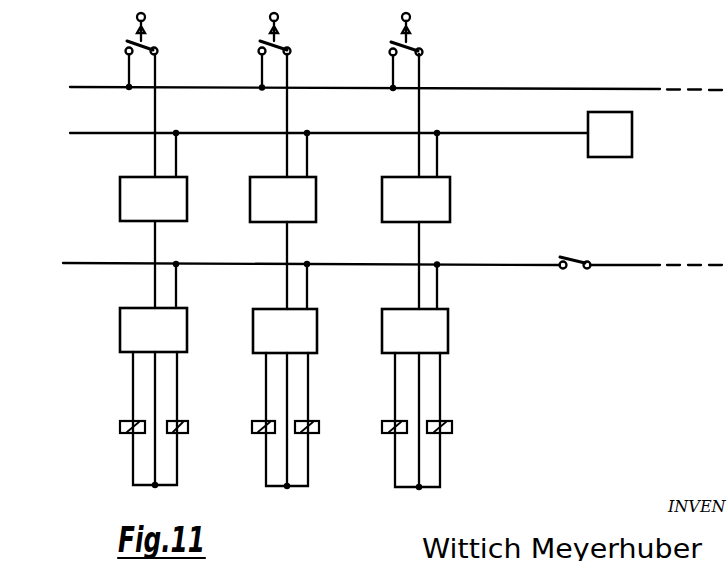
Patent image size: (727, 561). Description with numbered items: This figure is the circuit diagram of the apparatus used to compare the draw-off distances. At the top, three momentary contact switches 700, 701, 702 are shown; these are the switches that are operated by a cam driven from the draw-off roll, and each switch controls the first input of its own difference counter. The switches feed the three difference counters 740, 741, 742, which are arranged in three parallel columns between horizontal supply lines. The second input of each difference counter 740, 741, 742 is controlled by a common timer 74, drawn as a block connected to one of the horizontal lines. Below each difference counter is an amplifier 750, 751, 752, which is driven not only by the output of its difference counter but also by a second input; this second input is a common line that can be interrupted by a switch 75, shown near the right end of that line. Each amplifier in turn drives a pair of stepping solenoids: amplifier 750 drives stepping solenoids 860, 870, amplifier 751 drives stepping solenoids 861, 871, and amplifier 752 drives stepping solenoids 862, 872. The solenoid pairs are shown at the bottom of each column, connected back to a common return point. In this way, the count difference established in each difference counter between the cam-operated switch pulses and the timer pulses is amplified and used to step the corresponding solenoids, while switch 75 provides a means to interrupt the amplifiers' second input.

The momentary contact switch 700 is at (143, 32).
The momentary contact switch 701 is at (276, 32).
The momentary contact switch 702 is at (409, 32).
The timer 74 is at (620, 147).
The switch 75 is at (577, 260).
The difference counter 740 is at (135, 201).
The difference counter 741 is at (267, 207).
The difference counter 742 is at (438, 207).
The amplifier 750 is at (130, 338).
The amplifier 751 is at (263, 337).
The amplifier 752 is at (438, 335).
The stepping solenoid 860 is at (120, 432).
The stepping solenoid 870 is at (188, 431).
The stepping solenoid 861 is at (257, 432).
The stepping solenoid 871 is at (318, 432).
The stepping solenoid 862 is at (387, 433).
The stepping solenoid 872 is at (452, 432).